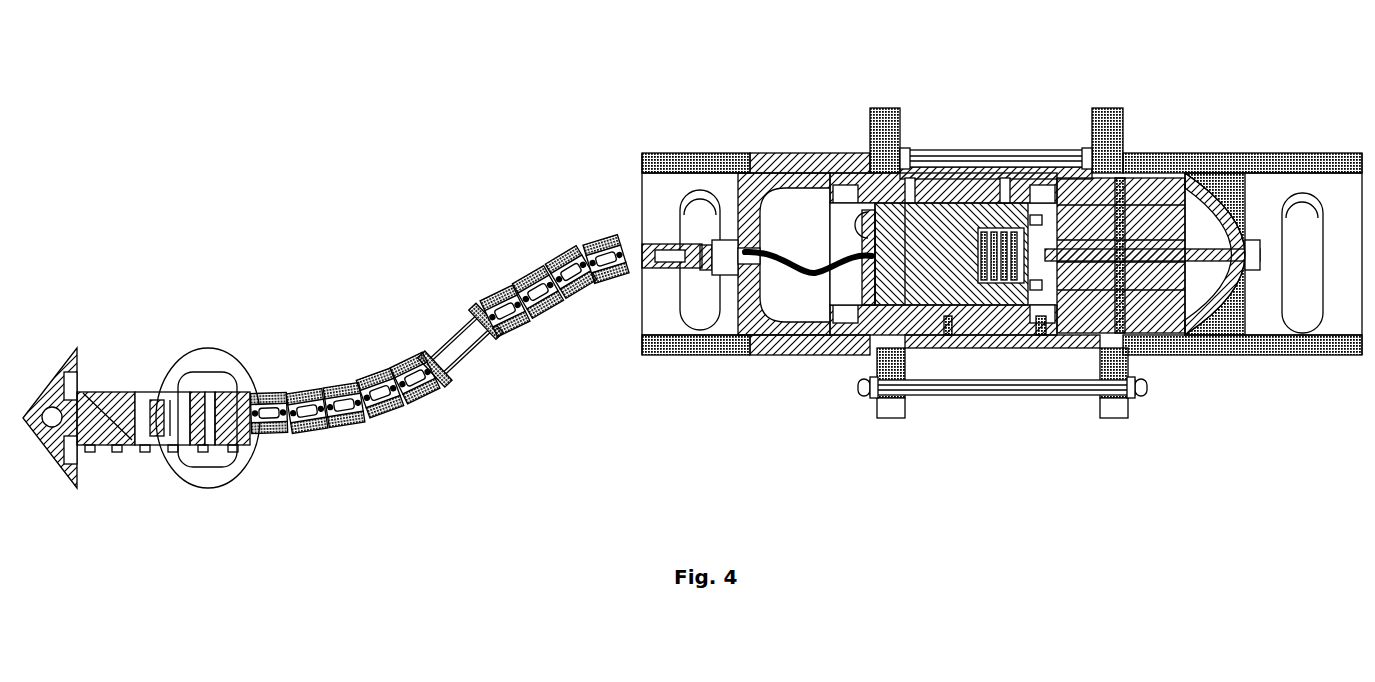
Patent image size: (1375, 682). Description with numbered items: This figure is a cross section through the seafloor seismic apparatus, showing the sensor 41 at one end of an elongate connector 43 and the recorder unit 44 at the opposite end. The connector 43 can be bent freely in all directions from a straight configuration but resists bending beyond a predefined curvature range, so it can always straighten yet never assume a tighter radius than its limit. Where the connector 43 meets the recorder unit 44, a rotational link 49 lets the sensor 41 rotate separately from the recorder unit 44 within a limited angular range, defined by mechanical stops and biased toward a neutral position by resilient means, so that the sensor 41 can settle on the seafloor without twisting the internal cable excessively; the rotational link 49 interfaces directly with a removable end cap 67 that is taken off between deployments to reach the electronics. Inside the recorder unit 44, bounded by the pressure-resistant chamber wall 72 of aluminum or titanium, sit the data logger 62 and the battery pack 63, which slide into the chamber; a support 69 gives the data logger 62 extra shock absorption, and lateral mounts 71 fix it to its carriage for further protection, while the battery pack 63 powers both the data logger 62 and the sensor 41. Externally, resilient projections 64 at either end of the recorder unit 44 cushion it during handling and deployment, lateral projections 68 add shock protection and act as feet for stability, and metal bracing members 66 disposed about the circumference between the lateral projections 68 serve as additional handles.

The sensor 41 is at (132, 490).
The elongate connector 43 is at (445, 404).
The recorder unit 44 is at (949, 267).
The rotational link 49 is at (692, 232).
The data logger 62 is at (947, 237).
The battery pack 63 is at (1143, 200).
The projections 64 is at (687, 153).
The metal bracing members 66 is at (1023, 160).
The removable end cap 67 is at (773, 162).
The lateral projections 68 is at (885, 108).
The support 69 is at (1043, 323).
The lateral mounts 71 is at (937, 330).
The chamber wall 72 is at (1212, 190).